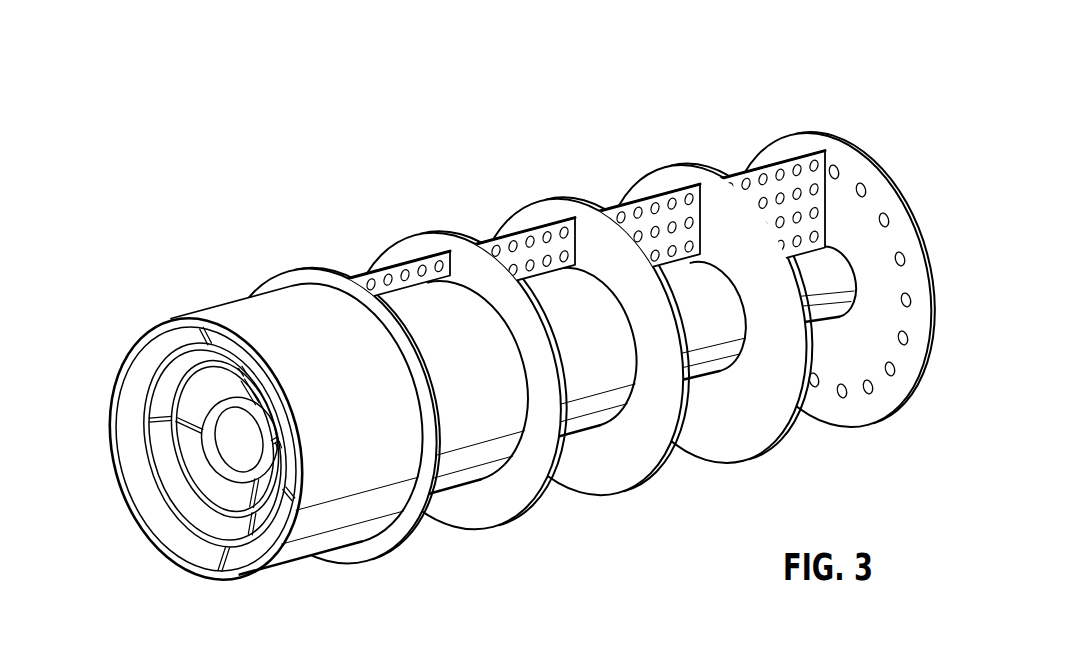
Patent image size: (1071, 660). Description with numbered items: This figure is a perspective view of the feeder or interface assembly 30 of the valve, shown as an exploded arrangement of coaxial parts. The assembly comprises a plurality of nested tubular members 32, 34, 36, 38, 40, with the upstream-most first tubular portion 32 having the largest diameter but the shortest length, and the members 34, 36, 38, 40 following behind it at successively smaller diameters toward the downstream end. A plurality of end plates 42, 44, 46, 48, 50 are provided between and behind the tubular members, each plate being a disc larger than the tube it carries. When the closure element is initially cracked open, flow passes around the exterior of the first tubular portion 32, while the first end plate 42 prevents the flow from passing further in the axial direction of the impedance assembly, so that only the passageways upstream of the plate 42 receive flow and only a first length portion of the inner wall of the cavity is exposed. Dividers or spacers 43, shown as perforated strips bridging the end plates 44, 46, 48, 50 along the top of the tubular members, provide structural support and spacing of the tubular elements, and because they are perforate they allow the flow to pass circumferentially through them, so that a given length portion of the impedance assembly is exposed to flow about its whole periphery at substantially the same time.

The telescoping roller assembly 30 is at (522, 330).
The first tubular portion 32 is at (327, 470).
The tubular member 34 is at (470, 440).
The tubular member 36 is at (590, 392).
The tubular member 38 is at (712, 330).
The tubular member 40 is at (828, 290).
The first end plate 42 is at (305, 272).
The dividers or spacers 43 is at (388, 263).
The end plate 44 is at (418, 249).
The end plate 46 is at (538, 215).
The end plate 48 is at (662, 186).
The end plate 50 is at (790, 144).